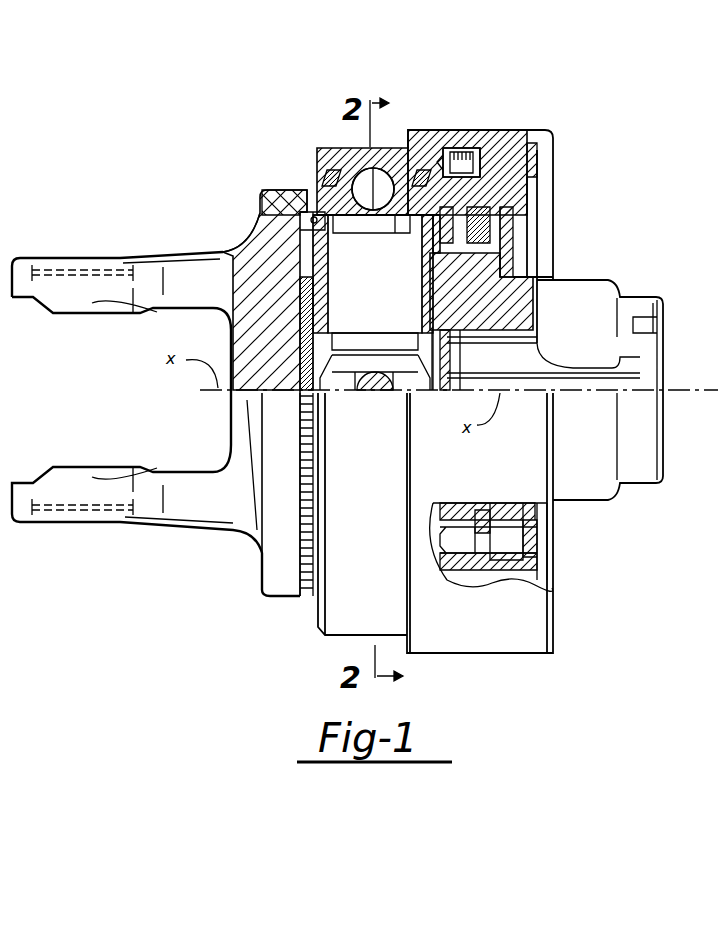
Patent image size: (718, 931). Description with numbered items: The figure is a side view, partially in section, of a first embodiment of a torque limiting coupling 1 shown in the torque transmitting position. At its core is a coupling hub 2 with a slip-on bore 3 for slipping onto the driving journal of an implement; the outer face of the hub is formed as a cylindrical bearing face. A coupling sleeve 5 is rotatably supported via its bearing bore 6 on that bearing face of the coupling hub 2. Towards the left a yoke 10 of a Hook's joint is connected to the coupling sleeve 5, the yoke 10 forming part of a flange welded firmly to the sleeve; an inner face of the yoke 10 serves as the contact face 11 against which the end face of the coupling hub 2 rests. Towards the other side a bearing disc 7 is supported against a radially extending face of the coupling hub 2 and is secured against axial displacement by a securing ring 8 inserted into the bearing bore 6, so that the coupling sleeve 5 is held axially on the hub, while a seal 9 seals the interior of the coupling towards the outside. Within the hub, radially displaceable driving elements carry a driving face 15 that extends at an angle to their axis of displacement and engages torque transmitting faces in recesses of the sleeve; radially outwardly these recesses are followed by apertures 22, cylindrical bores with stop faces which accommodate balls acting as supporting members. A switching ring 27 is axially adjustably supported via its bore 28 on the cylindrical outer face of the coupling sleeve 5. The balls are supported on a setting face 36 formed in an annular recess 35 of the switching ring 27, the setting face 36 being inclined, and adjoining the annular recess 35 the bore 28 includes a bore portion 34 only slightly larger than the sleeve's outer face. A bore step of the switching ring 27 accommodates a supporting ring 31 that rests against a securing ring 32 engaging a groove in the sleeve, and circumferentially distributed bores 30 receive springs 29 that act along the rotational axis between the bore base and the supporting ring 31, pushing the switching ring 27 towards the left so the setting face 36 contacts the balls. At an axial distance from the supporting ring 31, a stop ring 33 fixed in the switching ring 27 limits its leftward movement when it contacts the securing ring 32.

The torque limiting coupling 1 is at (114, 140).
The coupling hub 2 is at (650, 323).
The slip-on bore 3 is at (640, 357).
The coupling sleeve 5 is at (332, 195).
The bearing bore 6 is at (283, 212).
The bearing disc 7 is at (381, 172).
The securing ring 8 is at (485, 190).
The seal 9 is at (497, 223).
The yoke 10 is at (260, 256).
The contact face 11 is at (258, 252).
The driving face 15 is at (388, 240).
The apertures 22 is at (229, 388).
The switching ring 27 is at (373, 172).
The bore 28 is at (327, 180).
The springs 29 is at (443, 157).
The bores 30 is at (463, 150).
The supporting ring 31 is at (480, 153).
The securing ring 32 is at (507, 200).
The stop ring 33 is at (540, 157).
The bore portion 34 is at (404, 232).
The annular recess 35 is at (345, 172).
The setting face 36 is at (378, 200).